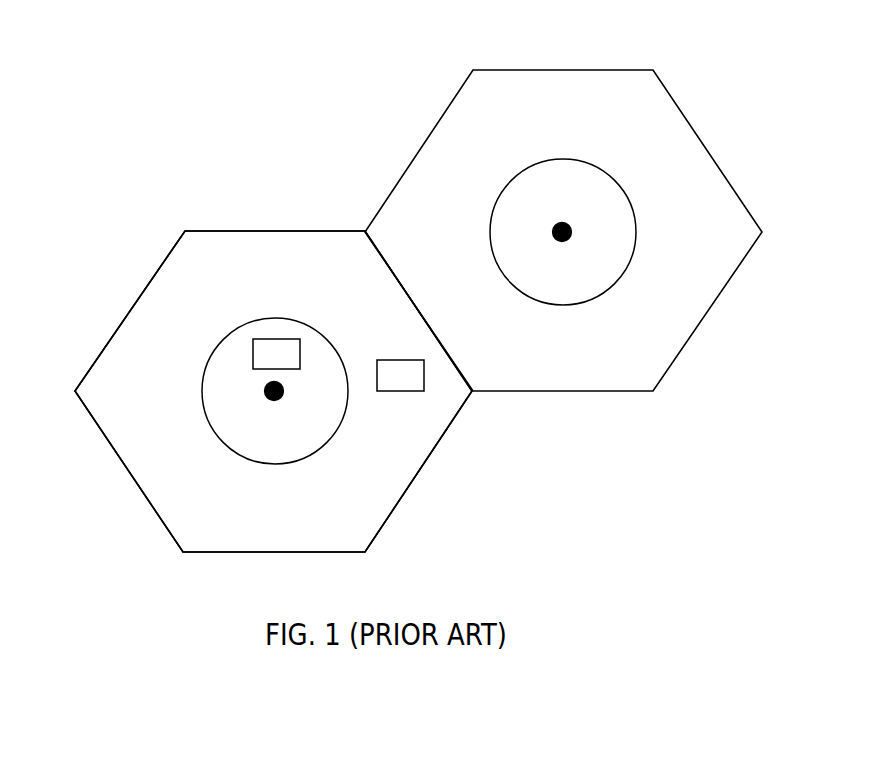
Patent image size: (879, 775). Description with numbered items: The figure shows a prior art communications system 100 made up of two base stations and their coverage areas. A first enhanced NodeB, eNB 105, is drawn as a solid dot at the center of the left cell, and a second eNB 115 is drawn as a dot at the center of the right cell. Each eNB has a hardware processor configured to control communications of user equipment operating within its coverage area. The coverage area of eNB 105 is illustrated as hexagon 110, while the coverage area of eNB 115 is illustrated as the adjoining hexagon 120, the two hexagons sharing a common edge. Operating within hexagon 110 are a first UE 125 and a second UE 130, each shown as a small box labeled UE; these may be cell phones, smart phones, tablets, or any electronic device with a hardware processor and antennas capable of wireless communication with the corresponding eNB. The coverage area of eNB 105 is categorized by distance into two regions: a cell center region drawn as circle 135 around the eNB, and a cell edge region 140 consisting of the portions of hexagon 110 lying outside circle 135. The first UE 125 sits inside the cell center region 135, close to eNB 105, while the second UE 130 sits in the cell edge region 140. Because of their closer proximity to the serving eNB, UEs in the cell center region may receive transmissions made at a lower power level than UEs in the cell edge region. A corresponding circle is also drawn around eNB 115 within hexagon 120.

The communications system 100 is at (236, 110).
The first enhanced NodeB (eNB) 105 is at (282, 394).
The hexagon 110 is at (113, 333).
The second eNB 115 is at (569, 237).
The hexagon 120 is at (703, 147).
The first UE 125 is at (300, 340).
The second UE 130 is at (400, 391).
The cell center region 135 is at (227, 337).
The cell edge region 140 is at (167, 478).